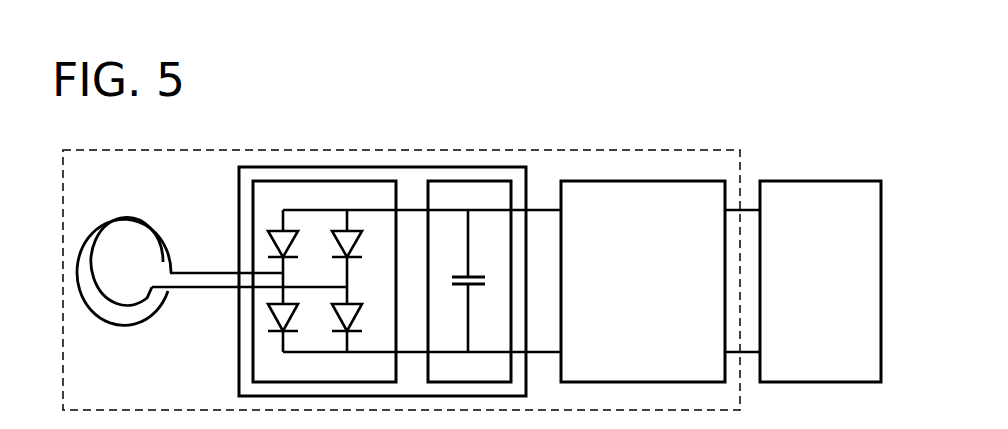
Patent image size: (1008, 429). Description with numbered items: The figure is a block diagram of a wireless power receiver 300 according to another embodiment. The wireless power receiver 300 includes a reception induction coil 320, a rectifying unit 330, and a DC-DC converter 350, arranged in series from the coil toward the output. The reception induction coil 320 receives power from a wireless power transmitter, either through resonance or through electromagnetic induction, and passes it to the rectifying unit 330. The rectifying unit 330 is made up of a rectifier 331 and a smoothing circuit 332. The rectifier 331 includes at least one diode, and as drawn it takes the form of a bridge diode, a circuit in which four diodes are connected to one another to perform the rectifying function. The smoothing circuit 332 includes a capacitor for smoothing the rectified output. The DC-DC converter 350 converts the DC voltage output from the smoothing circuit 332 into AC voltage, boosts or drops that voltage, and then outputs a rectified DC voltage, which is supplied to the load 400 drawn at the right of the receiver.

The wireless power receiver 300 is at (410, 150).
The reception induction coil 320 is at (125, 217).
The rectifying unit 330 is at (260, 167).
The rectifier 331 is at (346, 181).
The smoothing circuit 332 is at (473, 181).
The DC-DC converter 350 is at (630, 181).
The load 400 is at (824, 181).